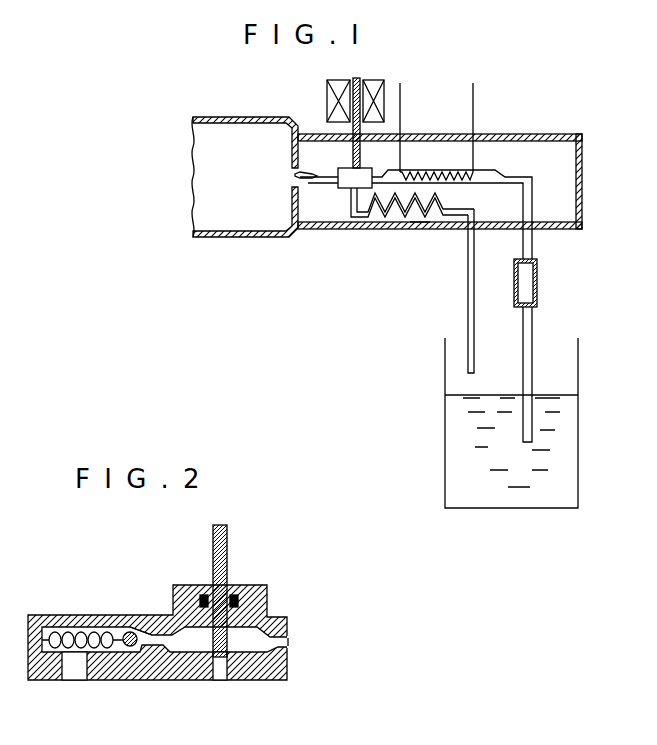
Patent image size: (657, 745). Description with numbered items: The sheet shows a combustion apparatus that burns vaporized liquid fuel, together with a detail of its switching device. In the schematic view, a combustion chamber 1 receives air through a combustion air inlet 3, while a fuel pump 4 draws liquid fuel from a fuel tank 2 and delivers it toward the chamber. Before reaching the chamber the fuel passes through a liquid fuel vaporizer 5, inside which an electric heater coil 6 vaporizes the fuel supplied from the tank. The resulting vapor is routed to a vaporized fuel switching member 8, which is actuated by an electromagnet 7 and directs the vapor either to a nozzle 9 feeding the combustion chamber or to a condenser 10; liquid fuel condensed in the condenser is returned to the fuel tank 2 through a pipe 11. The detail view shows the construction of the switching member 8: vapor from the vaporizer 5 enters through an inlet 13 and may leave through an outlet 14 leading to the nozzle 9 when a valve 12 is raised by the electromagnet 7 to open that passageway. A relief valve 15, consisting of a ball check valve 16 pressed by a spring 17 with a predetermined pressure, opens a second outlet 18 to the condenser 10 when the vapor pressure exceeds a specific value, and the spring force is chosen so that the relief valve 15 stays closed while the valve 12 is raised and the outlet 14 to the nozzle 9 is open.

In FIG. 1, the combustion chamber 1 is at (234, 135).
In FIG. 1, the fuel tank 2 is at (562, 458).
In FIG. 1, the combustion air inlet 3 is at (569, 178).
In FIG. 1, the fuel pump 4 is at (526, 283).
In FIG. 1, the liquid fuel vaporizer 5 is at (420, 172).
In FIG. 1, the electric heater coil 6 is at (473, 118).
In FIG. 1, the electromagnet 7 is at (355, 82).
In FIG. 1, the vaporized fuel switching member 8 is at (349, 192).
In FIG. 2, the vaporized fuel switching member 8 is at (258, 597).
In FIG. 1, the nozzle 9 is at (305, 180).
In FIG. 1, the condenser 10 is at (419, 220).
In FIG. 1, the pipe 11 is at (467, 320).
In FIG. 1, the valve 12 is at (352, 160).
In FIG. 2, the valve 12 is at (228, 545).
In FIG. 2, the inlet 13 is at (279, 645).
In FIG. 1, the outlet 14 is at (333, 184).
In FIG. 2, the outlet 14 is at (217, 665).
In FIG. 2, the relief valve 15 is at (136, 626).
In FIG. 2, the ball check valve 16 is at (128, 648).
In FIG. 2, the spring 17 is at (60, 632).
In FIG. 1, the outlet 18 is at (383, 214).
In FIG. 2, the outlet 18 is at (73, 670).